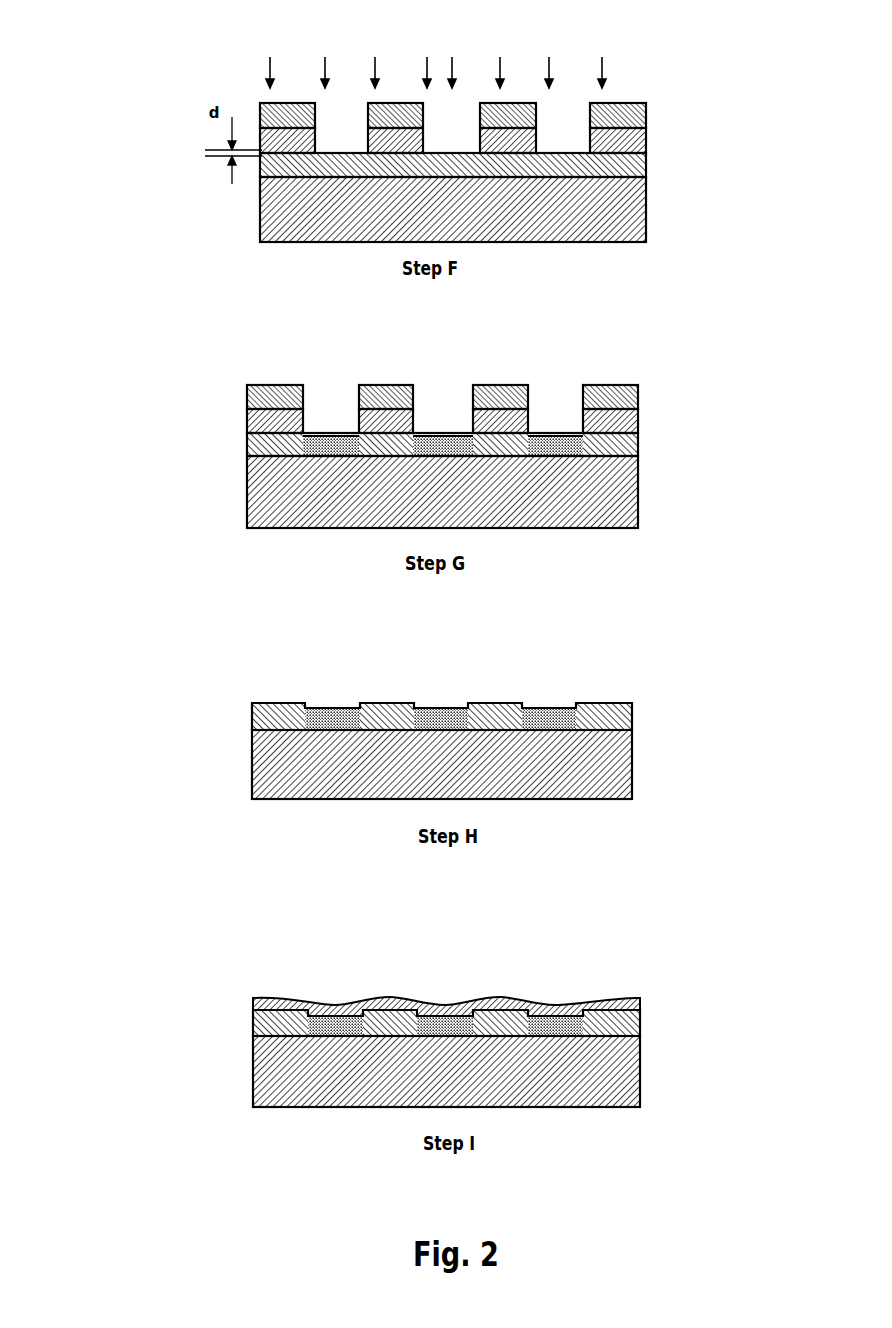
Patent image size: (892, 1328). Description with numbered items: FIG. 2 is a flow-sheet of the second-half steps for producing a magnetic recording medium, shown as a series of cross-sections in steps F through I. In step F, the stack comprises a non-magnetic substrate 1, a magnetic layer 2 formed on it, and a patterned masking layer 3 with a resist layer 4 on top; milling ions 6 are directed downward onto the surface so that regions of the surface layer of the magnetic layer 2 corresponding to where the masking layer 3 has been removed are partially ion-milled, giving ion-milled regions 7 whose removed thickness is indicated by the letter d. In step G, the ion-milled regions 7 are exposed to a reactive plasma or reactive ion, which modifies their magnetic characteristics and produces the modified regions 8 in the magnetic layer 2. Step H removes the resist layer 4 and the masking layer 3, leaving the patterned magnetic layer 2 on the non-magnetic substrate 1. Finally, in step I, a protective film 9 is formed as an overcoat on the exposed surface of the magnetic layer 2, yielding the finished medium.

The non-magnetic substrate 1 is at (646, 211).
The magnetic layer 2 is at (638, 447).
The masking layer 3 is at (646, 141).
The resist layer 4 is at (646, 113).
The milling ion 6 is at (602, 60).
The region from which surface layer portions of the magnetic layer have been partial 7 is at (567, 153).
The region of magnetic layer having modified magnetic characteristics 8 is at (559, 442).
The protective film 9 is at (640, 1003).